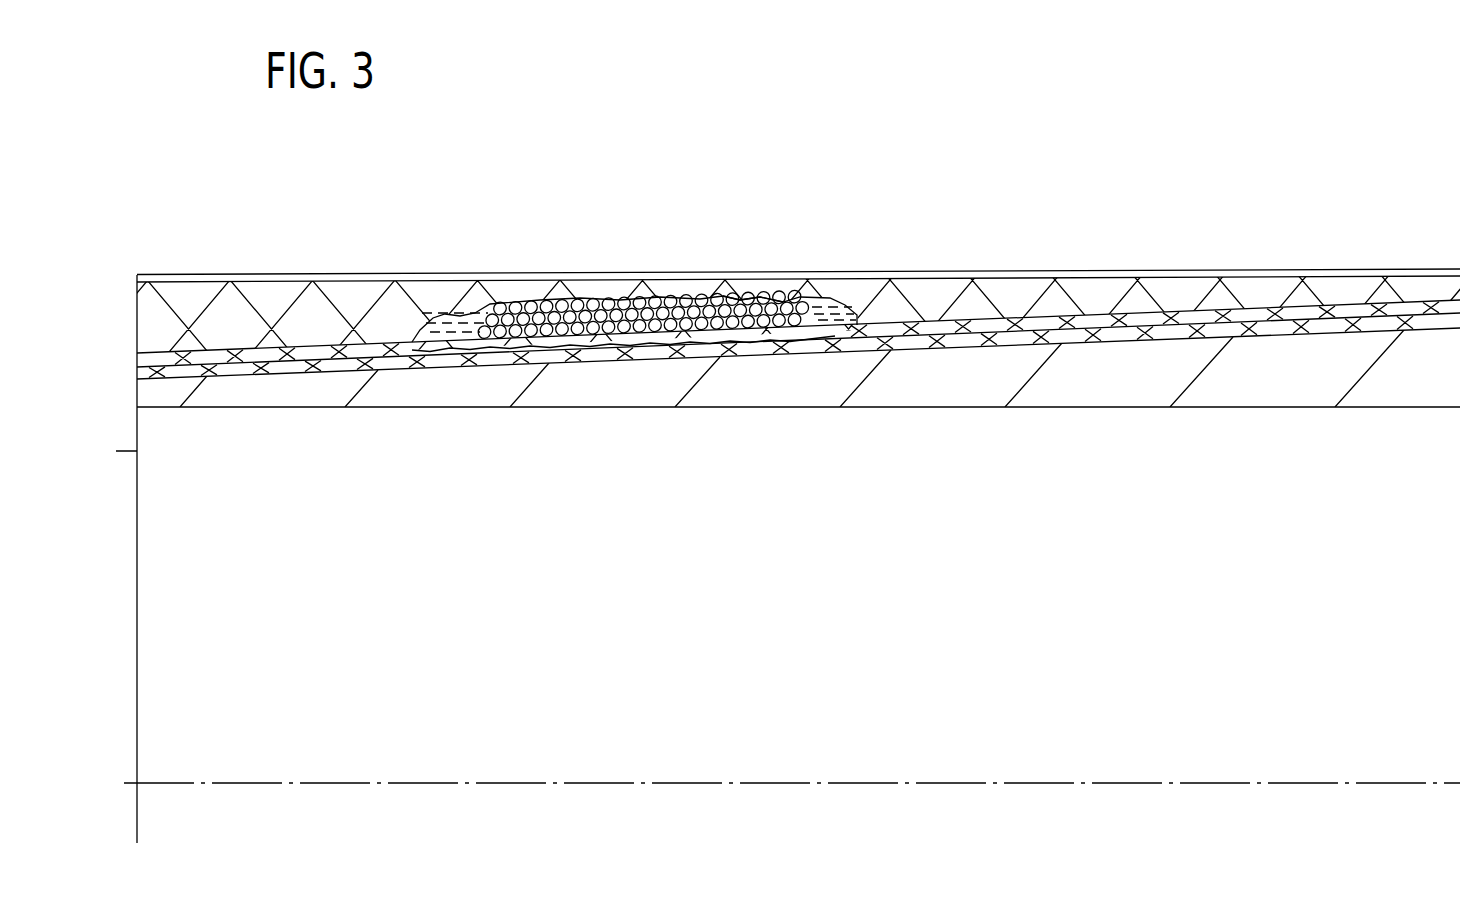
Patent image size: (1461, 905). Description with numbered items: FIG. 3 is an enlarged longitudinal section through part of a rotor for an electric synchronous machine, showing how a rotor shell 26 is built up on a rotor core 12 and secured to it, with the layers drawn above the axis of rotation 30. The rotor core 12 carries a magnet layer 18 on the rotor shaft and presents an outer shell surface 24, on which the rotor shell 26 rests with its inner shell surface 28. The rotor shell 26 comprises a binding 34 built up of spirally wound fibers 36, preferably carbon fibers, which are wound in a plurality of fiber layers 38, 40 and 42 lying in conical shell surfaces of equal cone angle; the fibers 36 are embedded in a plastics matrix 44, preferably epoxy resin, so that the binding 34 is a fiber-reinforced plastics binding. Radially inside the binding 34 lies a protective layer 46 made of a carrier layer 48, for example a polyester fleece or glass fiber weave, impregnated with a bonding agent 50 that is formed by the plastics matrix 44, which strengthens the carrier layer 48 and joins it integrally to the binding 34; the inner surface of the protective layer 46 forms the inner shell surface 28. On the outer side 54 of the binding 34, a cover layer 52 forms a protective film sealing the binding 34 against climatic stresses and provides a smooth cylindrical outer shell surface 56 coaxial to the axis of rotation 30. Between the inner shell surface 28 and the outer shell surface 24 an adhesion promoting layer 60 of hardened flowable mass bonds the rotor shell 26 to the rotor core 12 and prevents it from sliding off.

The rotor core 12 is at (1120, 703).
The magnet layer 18 is at (1245, 392).
The outer shell surface 24 is at (995, 345).
The rotor shell 26 is at (730, 242).
The inner shell surface 28 is at (903, 340).
The axis of rotation 30 is at (431, 785).
The binding 34 is at (698, 235).
The fibers 36 is at (686, 300).
The fiber layer 38 is at (850, 315).
The fiber layer 40 is at (820, 308).
The fiber layer 42 is at (498, 308).
The plastics matrix 44 is at (744, 302).
The protective layer 46 is at (798, 368).
The carrier layer 48 is at (492, 347).
The bonding agent 50 is at (590, 347).
The cover layer 52 is at (1162, 275).
The outer side 54 is at (1020, 273).
The outer shell surface 56 is at (210, 275).
The adhesion promoting layer 60 is at (812, 348).